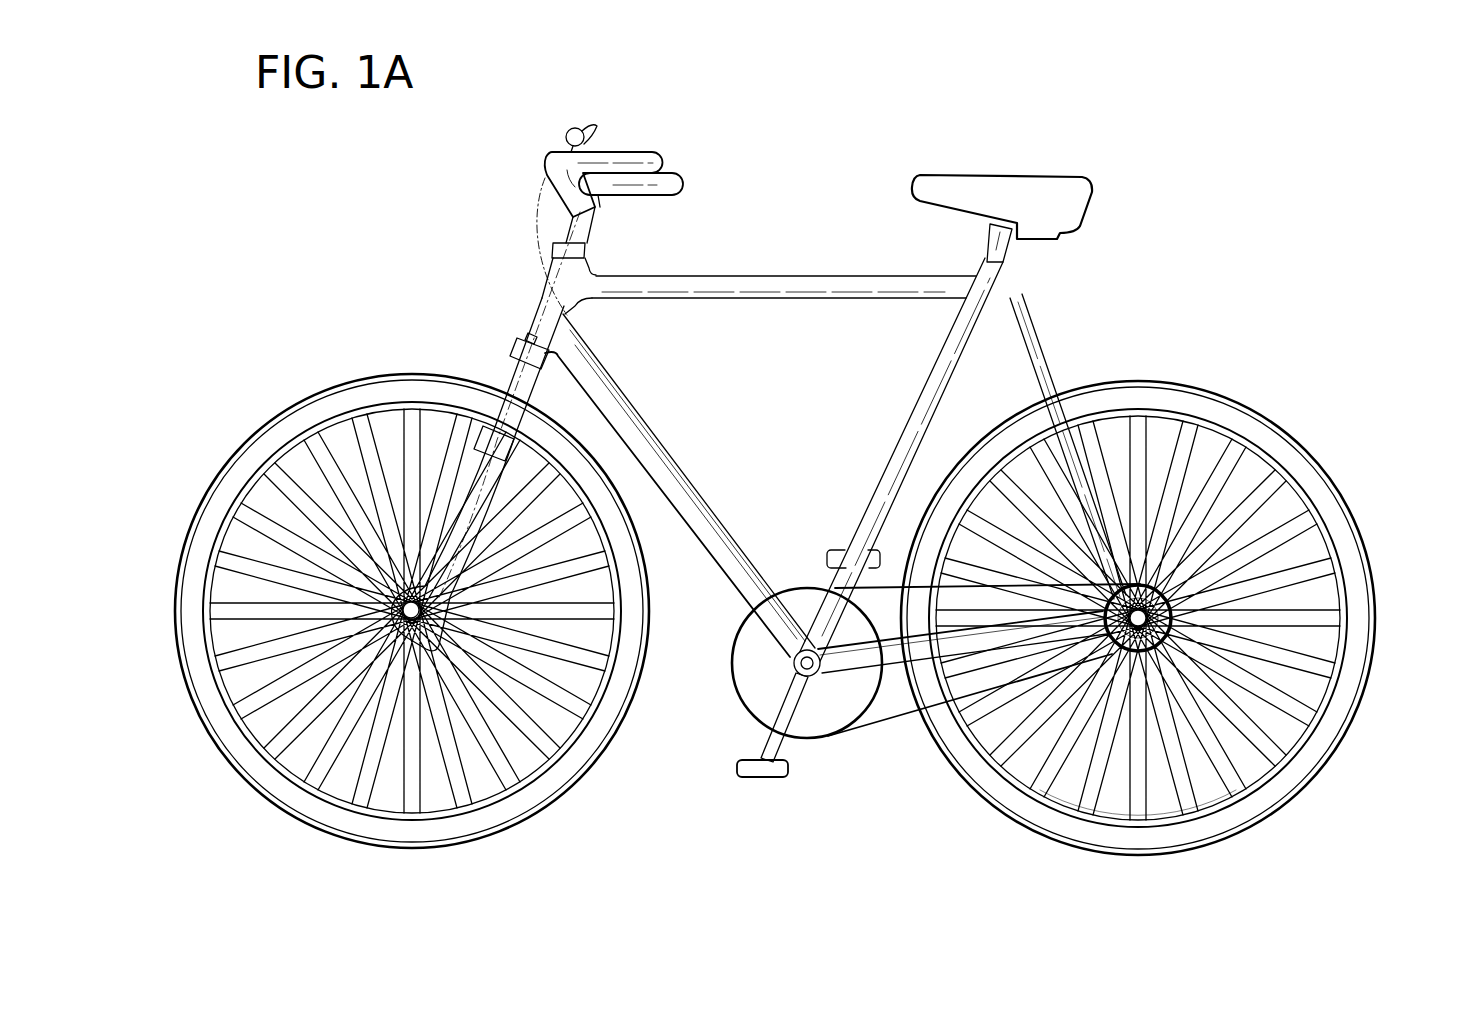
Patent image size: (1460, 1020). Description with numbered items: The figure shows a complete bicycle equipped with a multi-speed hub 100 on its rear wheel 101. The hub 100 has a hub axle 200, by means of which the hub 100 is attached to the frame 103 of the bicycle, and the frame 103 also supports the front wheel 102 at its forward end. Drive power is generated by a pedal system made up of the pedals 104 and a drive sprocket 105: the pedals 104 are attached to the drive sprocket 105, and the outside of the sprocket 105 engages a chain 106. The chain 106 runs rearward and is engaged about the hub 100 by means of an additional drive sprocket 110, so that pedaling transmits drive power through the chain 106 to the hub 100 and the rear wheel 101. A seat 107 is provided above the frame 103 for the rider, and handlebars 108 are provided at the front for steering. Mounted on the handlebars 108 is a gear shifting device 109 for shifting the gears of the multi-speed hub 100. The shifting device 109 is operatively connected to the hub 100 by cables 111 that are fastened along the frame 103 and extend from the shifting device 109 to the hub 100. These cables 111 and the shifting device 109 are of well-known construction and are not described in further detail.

The multi-speed hub 100 is at (1150, 618).
The rear wheel 101 is at (1294, 458).
The front wheel 102 is at (282, 418).
The frame 103 is at (776, 277).
The pedals 104 is at (772, 763).
The drive sprocket 105 is at (732, 658).
The chain 106 is at (891, 722).
The seat 107 is at (1045, 183).
The handlebars 108 is at (637, 152).
The gear shifting device 109 is at (576, 128).
The additional drive sprocket 110 is at (1155, 822).
The cables 111 is at (695, 488).
The hub axle 200 is at (1080, 660).